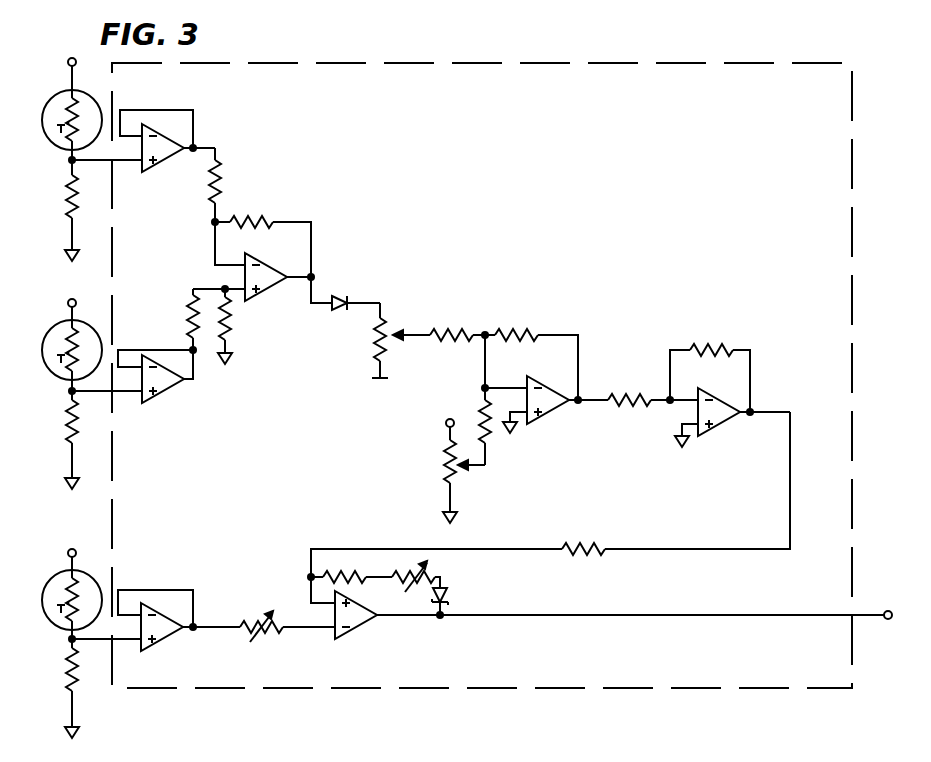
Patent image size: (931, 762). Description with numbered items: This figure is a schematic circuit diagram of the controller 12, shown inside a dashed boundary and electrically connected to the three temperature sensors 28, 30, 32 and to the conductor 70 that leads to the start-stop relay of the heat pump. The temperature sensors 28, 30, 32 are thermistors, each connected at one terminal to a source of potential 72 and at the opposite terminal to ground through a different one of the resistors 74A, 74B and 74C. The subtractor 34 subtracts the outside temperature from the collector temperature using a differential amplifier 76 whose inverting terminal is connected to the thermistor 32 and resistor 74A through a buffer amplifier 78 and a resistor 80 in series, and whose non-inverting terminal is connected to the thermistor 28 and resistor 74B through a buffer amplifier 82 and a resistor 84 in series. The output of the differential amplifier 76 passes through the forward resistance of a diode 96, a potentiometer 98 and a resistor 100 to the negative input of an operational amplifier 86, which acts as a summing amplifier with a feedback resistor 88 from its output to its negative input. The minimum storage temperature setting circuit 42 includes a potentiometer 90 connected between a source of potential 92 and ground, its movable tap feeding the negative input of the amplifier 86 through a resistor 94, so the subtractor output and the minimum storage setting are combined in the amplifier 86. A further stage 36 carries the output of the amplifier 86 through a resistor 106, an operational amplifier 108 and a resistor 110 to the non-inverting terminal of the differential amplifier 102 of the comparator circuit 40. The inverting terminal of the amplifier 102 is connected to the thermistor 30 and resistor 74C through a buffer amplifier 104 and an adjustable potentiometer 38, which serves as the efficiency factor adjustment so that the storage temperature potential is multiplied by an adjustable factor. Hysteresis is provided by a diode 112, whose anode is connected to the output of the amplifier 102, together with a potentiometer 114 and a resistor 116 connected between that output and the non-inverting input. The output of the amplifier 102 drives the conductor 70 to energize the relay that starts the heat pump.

The controller 12 is at (815, 395).
The temperature sensor 28 is at (60, 390).
The temperature sensor 30 is at (62, 633).
The temperature sensor 32 is at (60, 152).
The subtractor 34 is at (322, 197).
The amplifier stage 36 is at (620, 429).
The adjustable potentiometer 38 is at (268, 640).
The comparator circuit 40 is at (335, 541).
The minimum storage temperature setting circuit 42 is at (474, 473).
The conductor 70 is at (884, 610).
The source of potential 72 is at (68, 60).
The resistor 74A is at (65, 205).
The resistor 74B is at (65, 442).
The resistor 74C is at (66, 692).
The differential amplifier 76 is at (262, 290).
The buffer amplifier 78 is at (164, 170).
The resistor 80 is at (224, 180).
The buffer amplifier 82 is at (170, 393).
The resistor 84 is at (186, 306).
The operational amplifier 86 is at (553, 418).
The feedback resistor 88 is at (533, 332).
The potentiometer 90 is at (445, 455).
The source of potential 92 is at (446, 421).
The resistor 94 is at (484, 409).
The diode 96 is at (340, 301).
The potentiometer 98 is at (384, 330).
The resistor 100 is at (450, 332).
The differential amplifier 102 is at (358, 638).
The buffer amplifier 104 is at (168, 643).
The resistor 106 is at (620, 398).
The operational amplifier 108 is at (723, 433).
The resistor 110 is at (600, 547).
The diode 112 is at (446, 600).
The potentiometer 114 is at (429, 574).
The resistor 116 is at (349, 580).